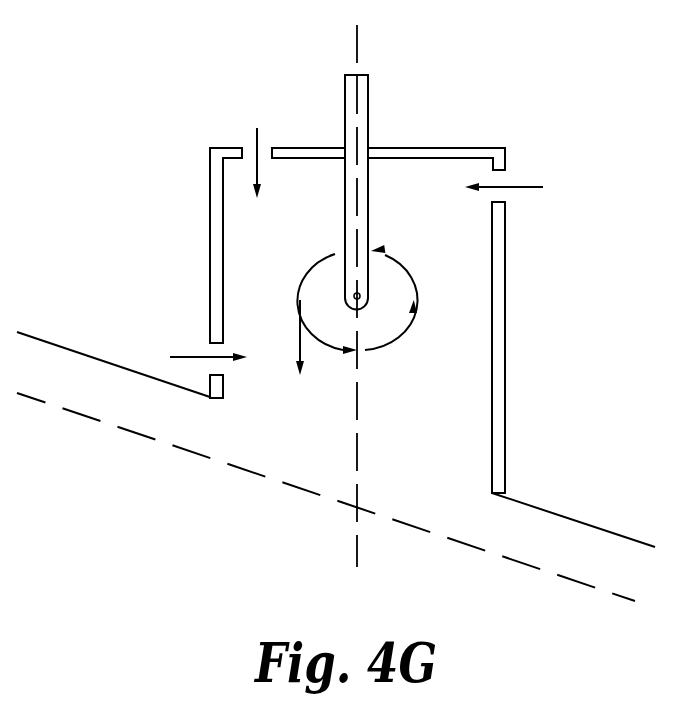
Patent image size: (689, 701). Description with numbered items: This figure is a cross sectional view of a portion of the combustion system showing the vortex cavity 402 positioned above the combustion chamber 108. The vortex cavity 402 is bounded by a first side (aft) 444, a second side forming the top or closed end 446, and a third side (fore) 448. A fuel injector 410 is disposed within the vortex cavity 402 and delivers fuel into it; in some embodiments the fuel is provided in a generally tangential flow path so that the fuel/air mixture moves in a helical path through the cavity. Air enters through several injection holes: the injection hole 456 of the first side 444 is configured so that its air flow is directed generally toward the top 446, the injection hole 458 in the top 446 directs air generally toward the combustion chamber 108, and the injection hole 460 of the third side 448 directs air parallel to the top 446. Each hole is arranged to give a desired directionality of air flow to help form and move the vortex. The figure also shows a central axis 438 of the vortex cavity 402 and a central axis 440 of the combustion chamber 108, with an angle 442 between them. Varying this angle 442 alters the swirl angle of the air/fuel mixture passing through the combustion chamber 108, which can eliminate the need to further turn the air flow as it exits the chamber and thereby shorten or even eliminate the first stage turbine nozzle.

The combustion chamber 108 is at (232, 533).
The vortex cavity 402 is at (168, 118).
The fuel injector 410 is at (368, 90).
The central axis of the vortex cavity 438 is at (357, 462).
The central axis of the combustion chamber 440 is at (137, 433).
The angle 442 is at (342, 384).
The first side (aft) 444 is at (505, 342).
The second side (top) 446 is at (493, 148).
The third side (fore) 448 is at (210, 188).
The injection hole 456 is at (498, 204).
The injection hole 458 is at (272, 150).
The injection hole 460 is at (213, 333).